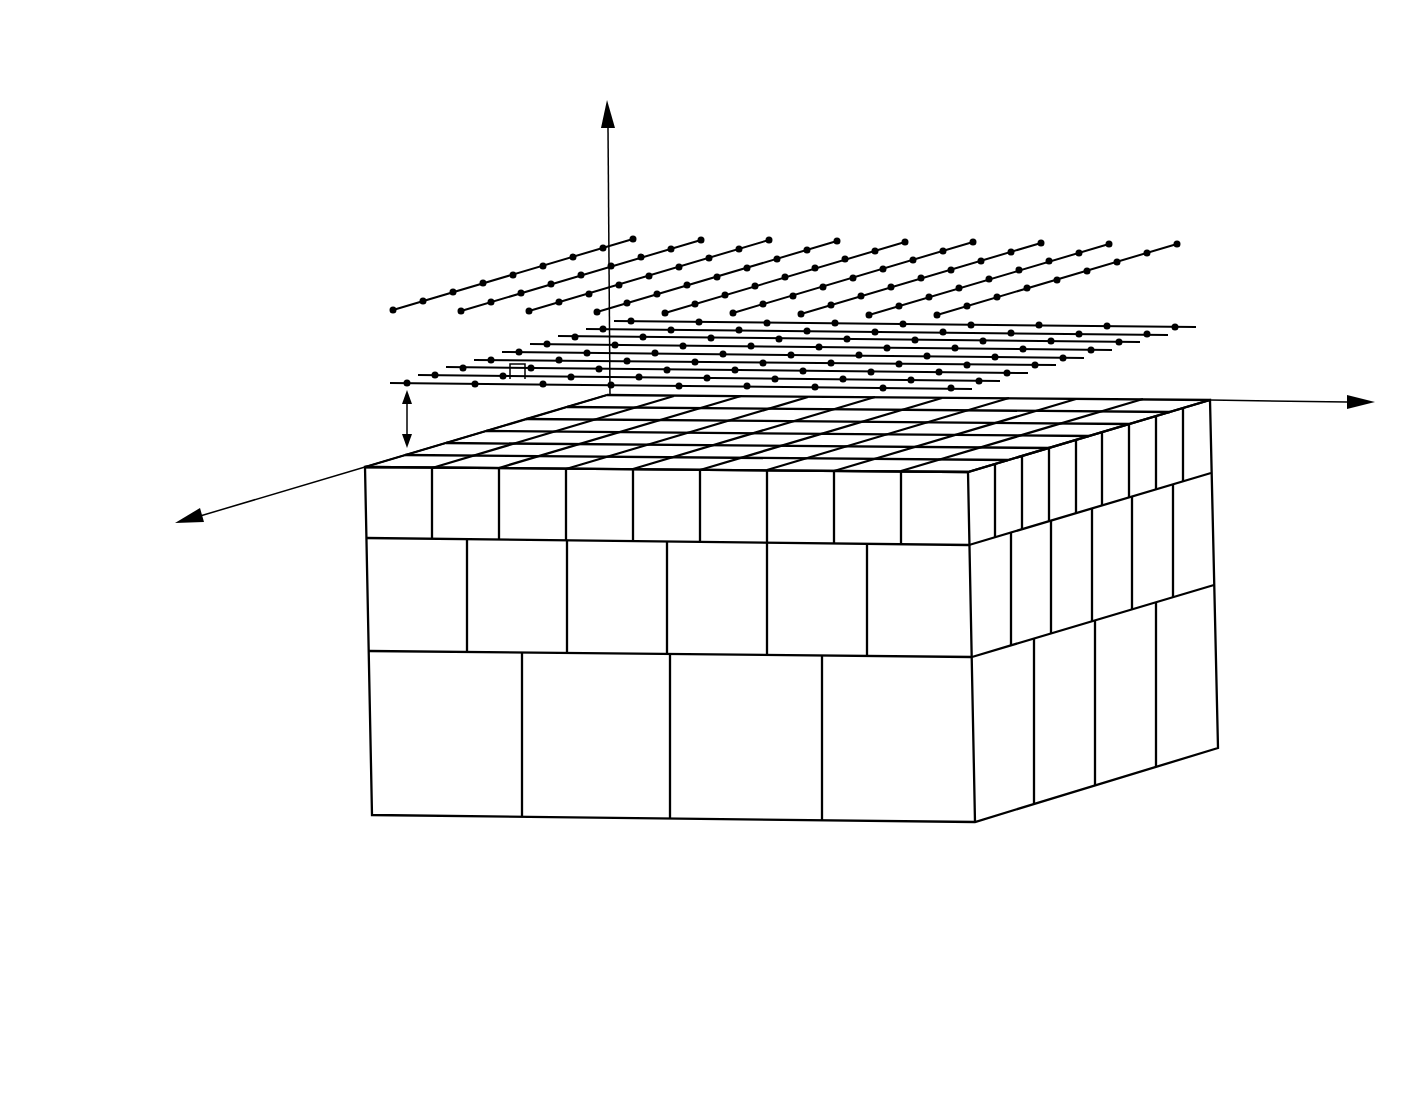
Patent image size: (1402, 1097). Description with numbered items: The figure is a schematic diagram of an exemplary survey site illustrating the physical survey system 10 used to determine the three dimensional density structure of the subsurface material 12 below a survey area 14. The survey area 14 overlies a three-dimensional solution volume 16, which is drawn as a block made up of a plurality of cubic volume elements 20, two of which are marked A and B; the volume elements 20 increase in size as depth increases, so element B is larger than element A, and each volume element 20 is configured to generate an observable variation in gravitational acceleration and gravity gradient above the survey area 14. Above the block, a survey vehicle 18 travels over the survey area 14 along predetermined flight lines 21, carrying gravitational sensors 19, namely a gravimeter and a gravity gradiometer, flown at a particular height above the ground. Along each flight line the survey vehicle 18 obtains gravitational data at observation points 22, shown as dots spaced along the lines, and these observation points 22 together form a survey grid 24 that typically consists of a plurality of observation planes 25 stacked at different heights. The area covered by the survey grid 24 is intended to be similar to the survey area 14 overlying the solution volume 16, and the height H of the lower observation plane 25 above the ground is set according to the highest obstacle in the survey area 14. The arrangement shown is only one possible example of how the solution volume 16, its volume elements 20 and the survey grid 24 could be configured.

The physical survey system 10 is at (1145, 174).
The subsurface material 12 is at (1219, 569).
The survey area 14 is at (1177, 398).
The solution volume 16 is at (819, 345).
The survey vehicle 18 is at (567, 367).
The gravitational sensors 19 is at (520, 369).
The cubic volume elements 20 is at (1199, 455).
The flight lines 21 is at (1132, 259).
The observation points 22 is at (555, 303).
The survey grid 24 is at (828, 223).
The observation planes 25 is at (760, 206).